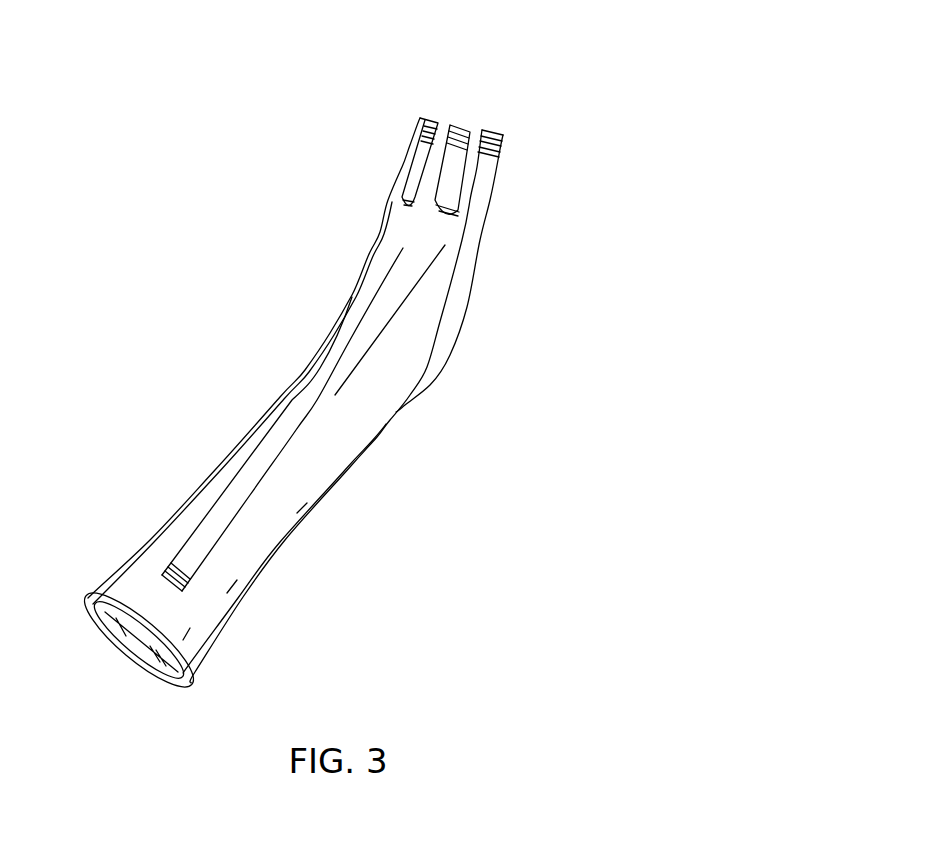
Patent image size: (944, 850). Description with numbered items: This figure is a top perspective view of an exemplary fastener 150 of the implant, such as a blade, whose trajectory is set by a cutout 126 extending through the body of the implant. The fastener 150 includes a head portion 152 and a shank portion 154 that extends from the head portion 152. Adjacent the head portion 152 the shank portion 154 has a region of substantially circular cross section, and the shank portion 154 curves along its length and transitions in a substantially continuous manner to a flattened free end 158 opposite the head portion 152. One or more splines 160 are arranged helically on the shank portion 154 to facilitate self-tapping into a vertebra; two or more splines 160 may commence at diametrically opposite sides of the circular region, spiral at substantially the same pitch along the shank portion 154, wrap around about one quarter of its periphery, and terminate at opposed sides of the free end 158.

The cutout 126 is at (445, 473).
The fastener 150 is at (510, 105).
The head portion 152 is at (129, 588).
The shank portion 154 is at (300, 485).
The flattened free end 158 is at (486, 175).
The spline 160 is at (440, 318).